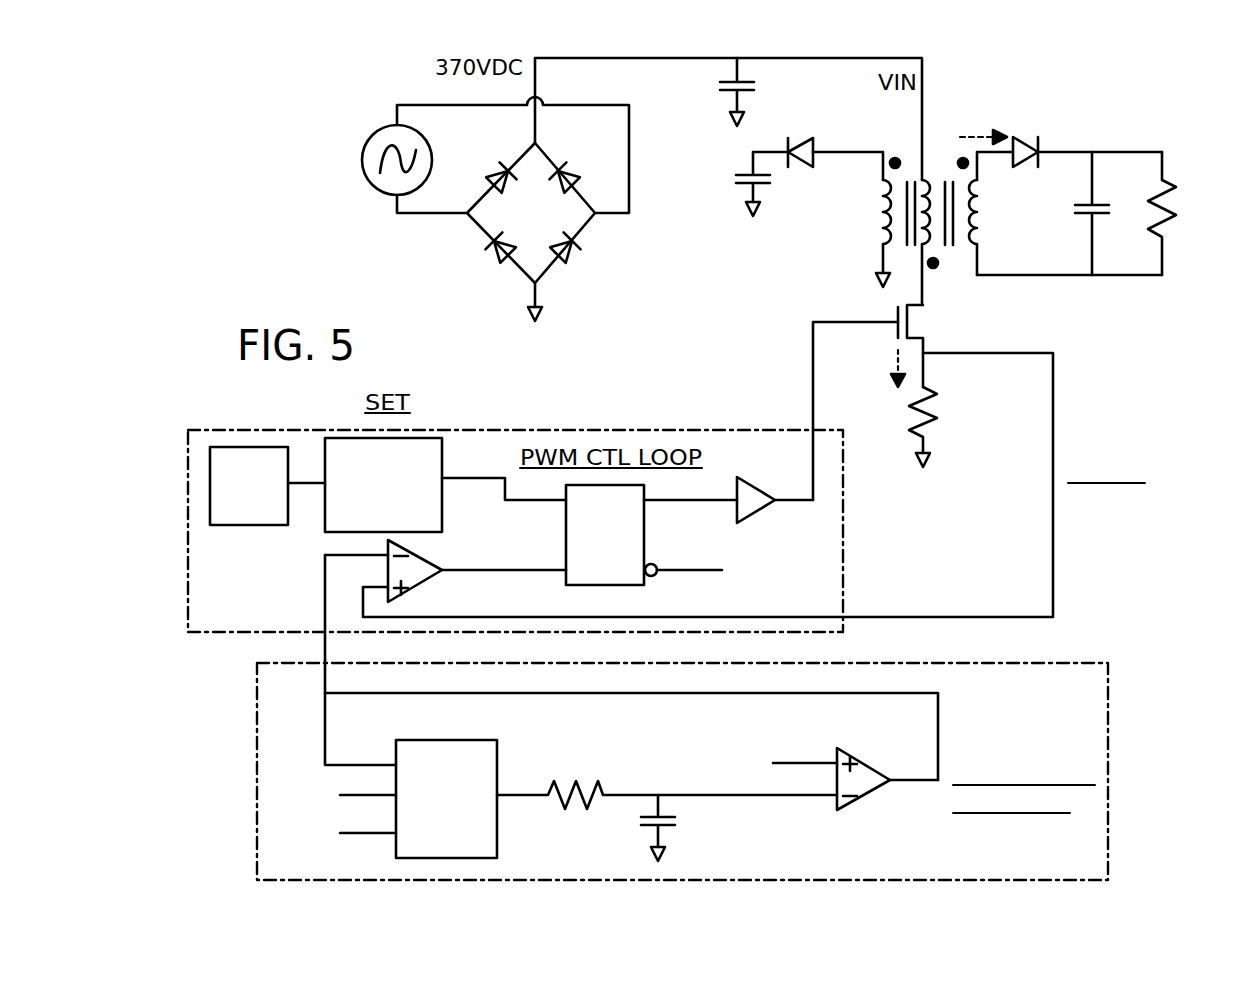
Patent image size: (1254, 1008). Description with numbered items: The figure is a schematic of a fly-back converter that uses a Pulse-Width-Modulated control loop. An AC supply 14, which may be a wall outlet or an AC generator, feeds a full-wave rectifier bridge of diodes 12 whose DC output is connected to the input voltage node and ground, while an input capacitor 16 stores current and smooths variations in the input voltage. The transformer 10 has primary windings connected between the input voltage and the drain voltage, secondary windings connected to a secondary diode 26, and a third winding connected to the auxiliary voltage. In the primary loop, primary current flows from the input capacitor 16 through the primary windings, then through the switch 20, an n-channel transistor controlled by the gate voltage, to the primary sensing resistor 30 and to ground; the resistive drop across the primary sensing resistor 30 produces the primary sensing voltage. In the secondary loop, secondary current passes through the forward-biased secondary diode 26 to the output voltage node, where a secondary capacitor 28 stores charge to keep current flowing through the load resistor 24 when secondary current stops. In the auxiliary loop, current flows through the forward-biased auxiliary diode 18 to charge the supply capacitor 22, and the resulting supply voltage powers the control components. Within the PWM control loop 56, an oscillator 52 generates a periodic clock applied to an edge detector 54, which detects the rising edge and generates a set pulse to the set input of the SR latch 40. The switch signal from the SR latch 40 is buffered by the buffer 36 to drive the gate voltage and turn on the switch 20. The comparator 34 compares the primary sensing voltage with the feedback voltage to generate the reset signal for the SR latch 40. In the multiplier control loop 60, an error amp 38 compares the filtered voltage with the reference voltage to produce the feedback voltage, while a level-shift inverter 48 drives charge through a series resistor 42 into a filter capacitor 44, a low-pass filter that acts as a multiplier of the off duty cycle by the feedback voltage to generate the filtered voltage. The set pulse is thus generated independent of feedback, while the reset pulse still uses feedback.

The transformer 10 is at (978, 226).
The bridge of diodes 12 is at (493, 171).
The AC supply 14 is at (371, 137).
The input capacitor 16 is at (720, 91).
The auxiliary diode 18 is at (807, 139).
The switch 20 is at (916, 330).
The VCC capacitor 22 is at (744, 181).
The load resistor 24 is at (1168, 200).
The secondary diode 26 is at (1025, 139).
The secondary capacitor 28 is at (1078, 213).
The primary sensing resistor 30 is at (932, 430).
The comparator 34 is at (418, 549).
The buffer 36 is at (768, 512).
The error amp 38 is at (866, 797).
The SR latch 40 is at (615, 547).
The series resistor 42 is at (566, 806).
The filter capacitor 44 is at (646, 823).
The level-shift inverter 48 is at (468, 841).
The oscillator 52 is at (275, 515).
The edge detector 54 is at (397, 517).
The PWM control loop 56 is at (498, 468).
The multiplier control loop 60 is at (1065, 841).